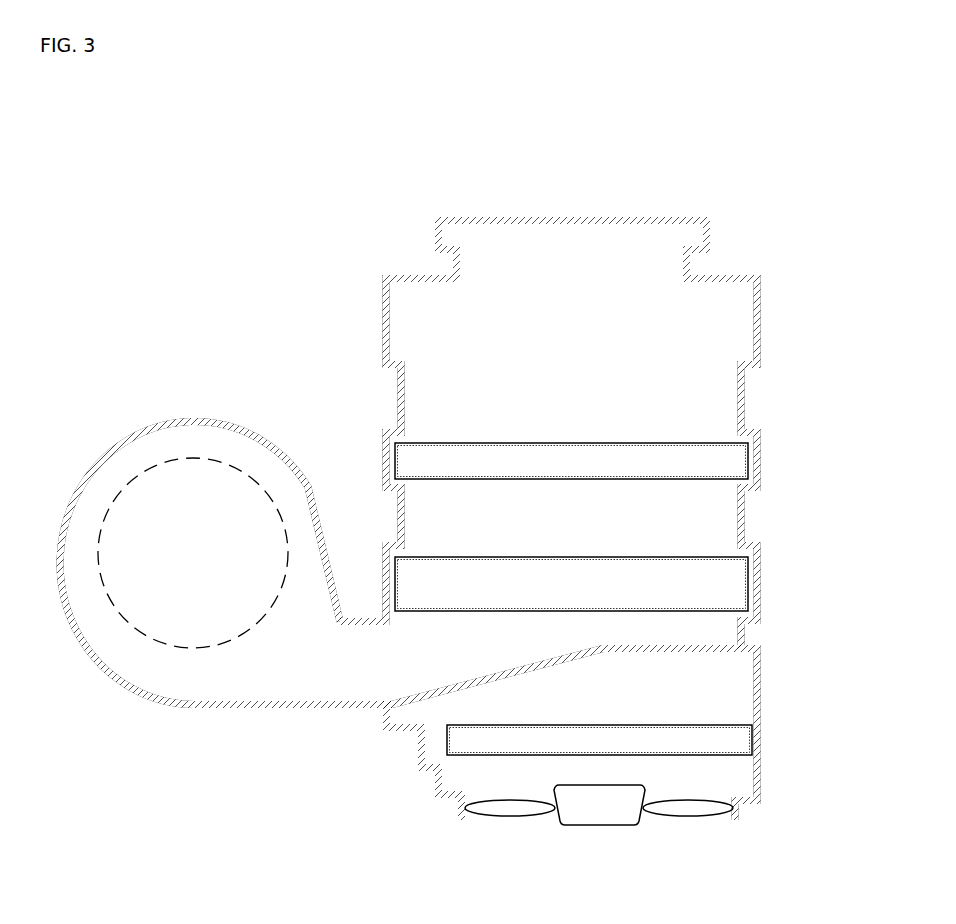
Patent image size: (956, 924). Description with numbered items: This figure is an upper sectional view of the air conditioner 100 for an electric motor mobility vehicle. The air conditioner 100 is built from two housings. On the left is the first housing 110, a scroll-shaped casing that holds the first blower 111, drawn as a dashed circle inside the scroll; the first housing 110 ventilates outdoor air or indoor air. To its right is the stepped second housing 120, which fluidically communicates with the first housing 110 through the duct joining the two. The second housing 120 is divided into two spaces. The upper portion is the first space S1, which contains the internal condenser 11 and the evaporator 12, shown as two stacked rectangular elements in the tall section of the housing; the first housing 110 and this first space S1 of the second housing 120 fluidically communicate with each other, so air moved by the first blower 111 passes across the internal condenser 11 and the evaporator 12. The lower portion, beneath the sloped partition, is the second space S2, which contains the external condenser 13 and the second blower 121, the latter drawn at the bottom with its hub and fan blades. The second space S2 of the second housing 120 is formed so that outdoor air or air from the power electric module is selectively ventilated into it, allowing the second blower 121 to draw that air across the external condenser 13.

The air conditioner 100 is at (485, 198).
The first housing 110 is at (130, 428).
The first blower 111 is at (197, 457).
The second housing 120 is at (412, 278).
The second blower 121 is at (587, 810).
The internal condenser 11 is at (730, 458).
The evaporator 12 is at (738, 585).
The external condenser 13 is at (730, 738).
The first space S1 is at (622, 503).
The second space S2 is at (597, 702).